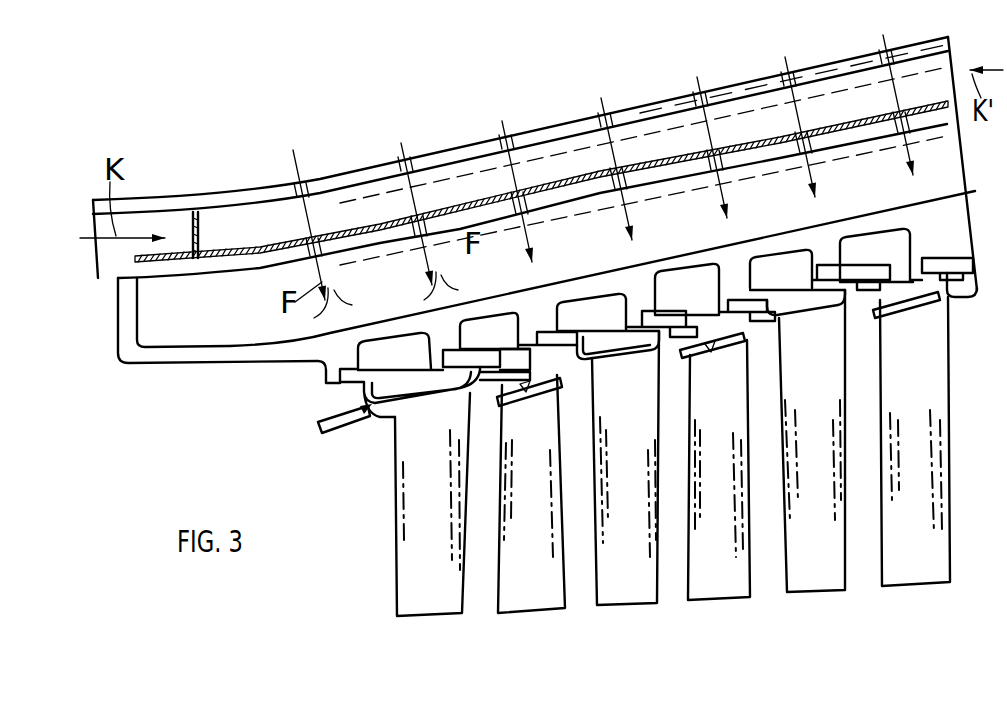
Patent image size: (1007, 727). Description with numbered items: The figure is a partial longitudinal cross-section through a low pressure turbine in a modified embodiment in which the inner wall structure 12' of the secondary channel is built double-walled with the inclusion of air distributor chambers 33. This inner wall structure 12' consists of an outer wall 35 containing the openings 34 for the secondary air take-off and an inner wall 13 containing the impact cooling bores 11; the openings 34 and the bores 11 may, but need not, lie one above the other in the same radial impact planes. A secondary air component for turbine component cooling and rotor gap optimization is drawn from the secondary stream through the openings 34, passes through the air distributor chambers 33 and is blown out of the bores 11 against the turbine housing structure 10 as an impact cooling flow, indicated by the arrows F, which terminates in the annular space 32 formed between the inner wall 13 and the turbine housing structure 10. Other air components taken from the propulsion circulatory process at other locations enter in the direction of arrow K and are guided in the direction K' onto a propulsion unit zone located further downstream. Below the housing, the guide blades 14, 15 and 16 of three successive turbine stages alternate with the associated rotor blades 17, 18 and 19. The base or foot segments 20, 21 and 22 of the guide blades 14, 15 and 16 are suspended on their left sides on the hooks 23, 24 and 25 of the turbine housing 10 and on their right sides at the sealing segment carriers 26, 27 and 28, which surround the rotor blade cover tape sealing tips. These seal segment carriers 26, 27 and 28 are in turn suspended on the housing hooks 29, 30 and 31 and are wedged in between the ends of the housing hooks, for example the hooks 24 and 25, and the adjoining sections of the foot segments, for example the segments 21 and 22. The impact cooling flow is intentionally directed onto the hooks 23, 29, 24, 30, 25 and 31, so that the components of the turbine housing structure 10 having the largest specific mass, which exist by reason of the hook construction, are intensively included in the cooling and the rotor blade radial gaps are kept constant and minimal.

The turbine housing structure 10 is at (186, 336).
The openings (impact cooling bores) 11 is at (427, 240).
The inner wall structure 12' is at (219, 153).
The inner wall 13 is at (117, 270).
The guide blade 14 is at (427, 588).
The guide blade 15 is at (632, 583).
The guide blade 16 is at (827, 573).
The rotor blade 17 is at (538, 588).
The rotor blade 18 is at (728, 582).
The rotor blade 19 is at (928, 566).
The base or foot segment 20 is at (378, 410).
The base or foot segment 21 is at (620, 362).
The base or foot segment 22 is at (800, 322).
The hook 23 is at (323, 392).
The hook 24 is at (532, 350).
The hook 25 is at (735, 265).
The sealing segment carrier 26 is at (527, 372).
The sealing segment carrier 27 is at (700, 344).
The sealing segment carrier 28 is at (888, 292).
The housing hook 29 is at (447, 333).
The housing hook 30 is at (630, 310).
The housing hook 31 is at (817, 253).
The annular space 32 is at (243, 306).
The air distributor chambers 33 is at (251, 244).
The openings 34 is at (302, 172).
The outer wall 35 is at (135, 207).